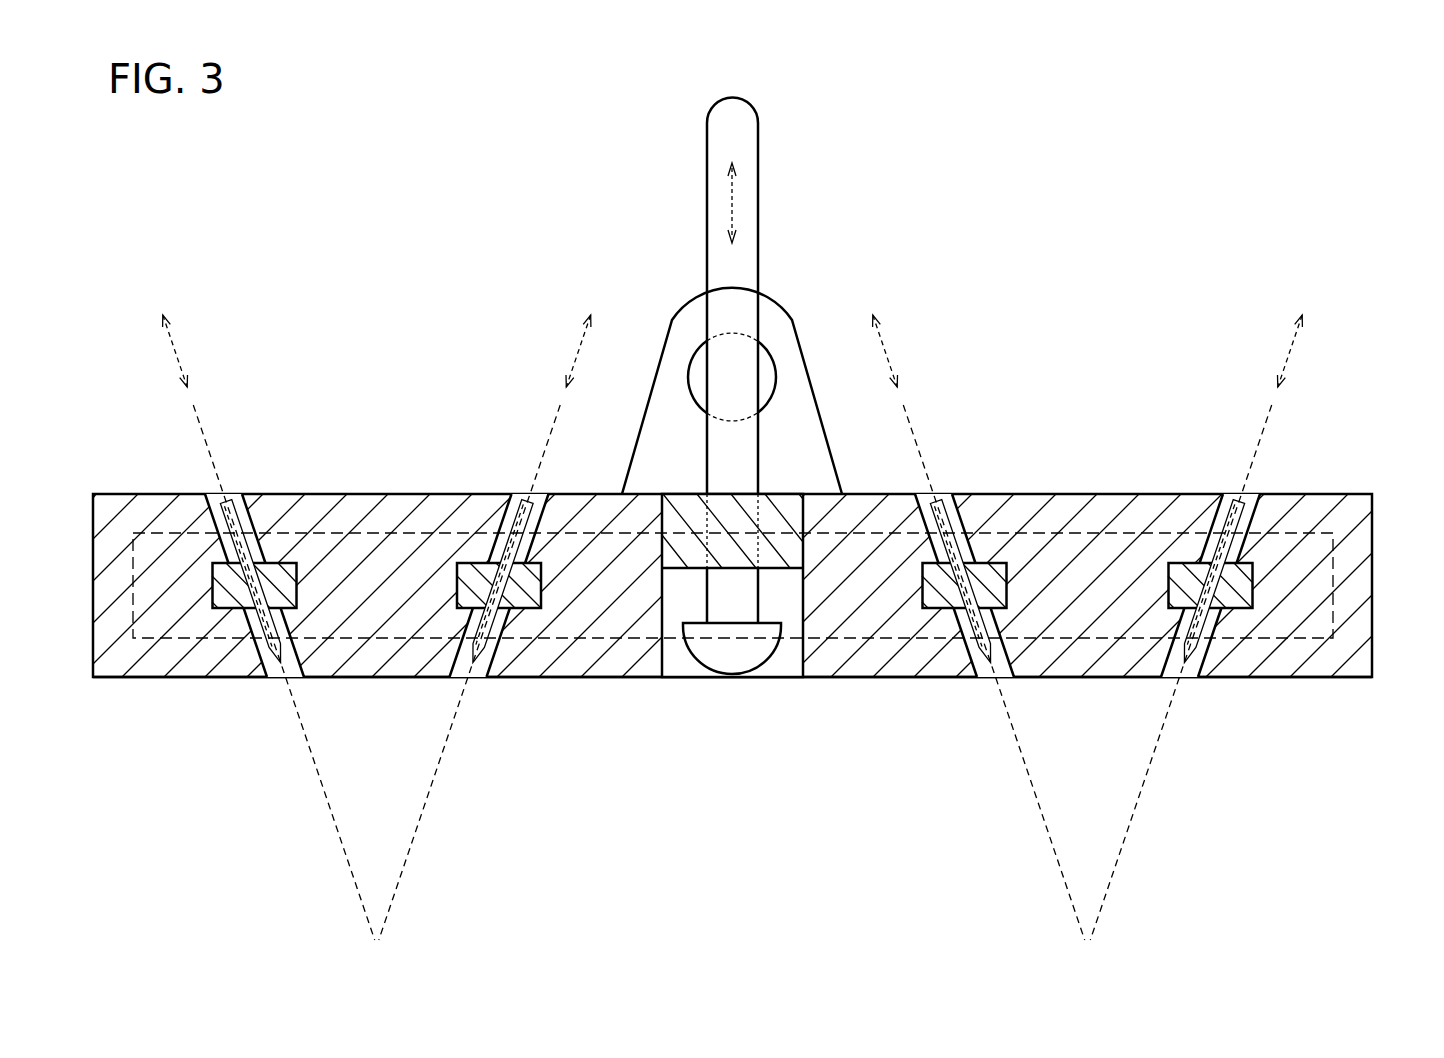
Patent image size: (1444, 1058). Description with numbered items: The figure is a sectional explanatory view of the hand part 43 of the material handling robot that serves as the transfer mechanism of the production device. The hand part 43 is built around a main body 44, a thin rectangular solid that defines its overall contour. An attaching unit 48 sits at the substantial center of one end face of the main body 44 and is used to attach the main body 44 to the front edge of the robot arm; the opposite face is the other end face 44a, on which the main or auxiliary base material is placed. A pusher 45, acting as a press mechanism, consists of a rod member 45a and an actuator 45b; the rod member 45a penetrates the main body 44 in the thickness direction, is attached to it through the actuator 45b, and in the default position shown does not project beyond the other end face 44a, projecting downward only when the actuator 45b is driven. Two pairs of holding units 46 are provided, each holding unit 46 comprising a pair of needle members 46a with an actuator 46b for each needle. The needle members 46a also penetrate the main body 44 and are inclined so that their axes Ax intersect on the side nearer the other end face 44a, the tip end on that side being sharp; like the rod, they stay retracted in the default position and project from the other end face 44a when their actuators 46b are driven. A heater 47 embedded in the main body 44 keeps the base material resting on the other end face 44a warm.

The hand part 43 is at (1112, 178).
The main body 44 is at (1357, 494).
The other end face 44a is at (1312, 678).
The pusher 45 is at (650, 388).
The rod member 45a is at (706, 226).
The actuator 45b is at (700, 556).
The holding unit 46 is at (732, 529).
The needle member 46a is at (515, 433).
The actuator 46b is at (272, 563).
The heater 47 is at (1343, 580).
The attaching unit 48 is at (782, 306).
The axis Ax is at (192, 409).